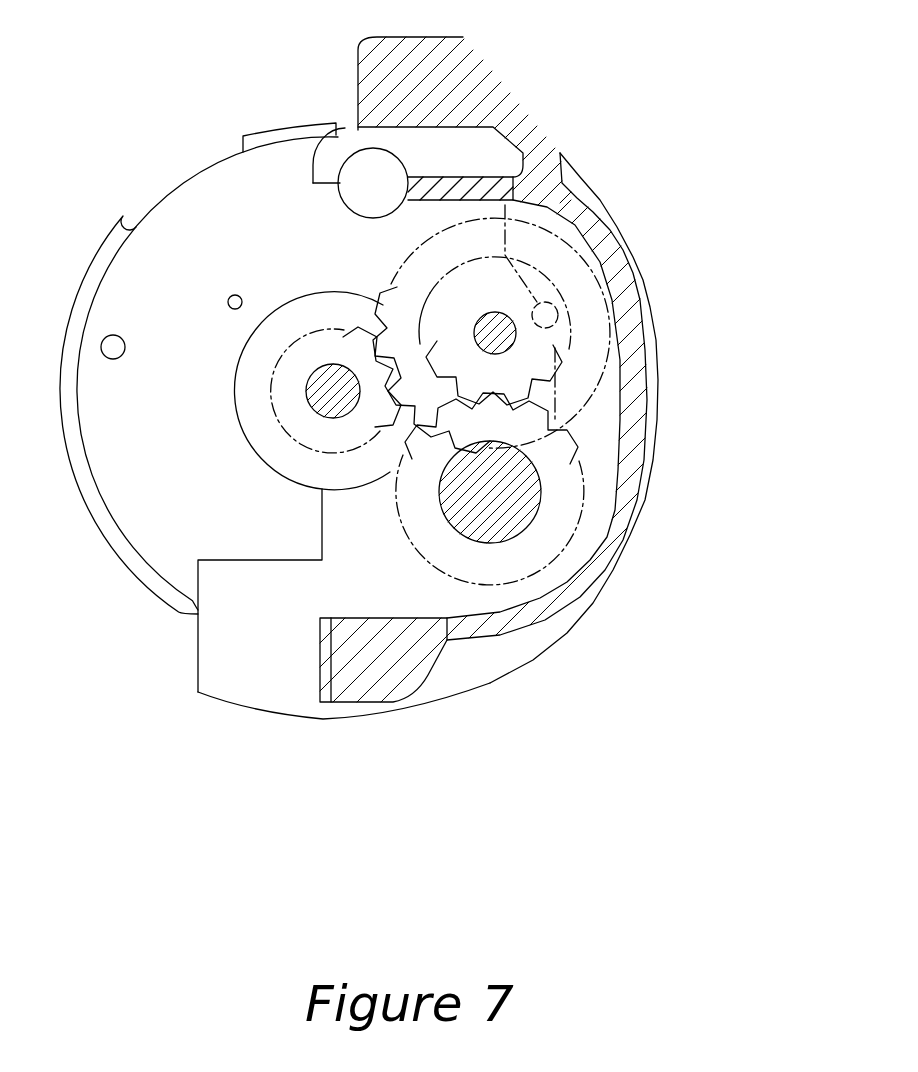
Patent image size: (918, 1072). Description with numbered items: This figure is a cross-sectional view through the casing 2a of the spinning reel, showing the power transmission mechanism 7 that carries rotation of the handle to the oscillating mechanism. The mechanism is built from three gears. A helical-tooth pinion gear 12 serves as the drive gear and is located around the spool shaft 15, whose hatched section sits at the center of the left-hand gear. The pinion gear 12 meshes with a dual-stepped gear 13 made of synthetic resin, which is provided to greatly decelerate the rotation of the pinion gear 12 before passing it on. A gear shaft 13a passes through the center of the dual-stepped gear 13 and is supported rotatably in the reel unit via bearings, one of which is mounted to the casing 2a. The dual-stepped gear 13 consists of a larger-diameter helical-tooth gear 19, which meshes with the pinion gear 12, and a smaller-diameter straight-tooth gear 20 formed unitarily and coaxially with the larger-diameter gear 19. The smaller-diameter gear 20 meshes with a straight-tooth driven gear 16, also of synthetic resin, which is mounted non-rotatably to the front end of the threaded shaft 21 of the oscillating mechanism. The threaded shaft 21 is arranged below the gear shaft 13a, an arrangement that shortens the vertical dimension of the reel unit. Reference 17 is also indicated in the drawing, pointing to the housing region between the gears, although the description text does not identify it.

The casing 2a is at (470, 77).
The power transmission mechanism 7 is at (553, 270).
The pinion gear 12 is at (288, 333).
The dual-stepped gear 13 is at (350, 267).
The gear shaft 13a is at (500, 336).
The spool shaft 15 is at (325, 395).
The driven gear 16 is at (550, 413).
The gear housing 17 is at (380, 543).
The larger-diameter gear 19 is at (577, 197).
The smaller-diameter gear 20 is at (558, 292).
The threaded shaft 21 is at (525, 500).